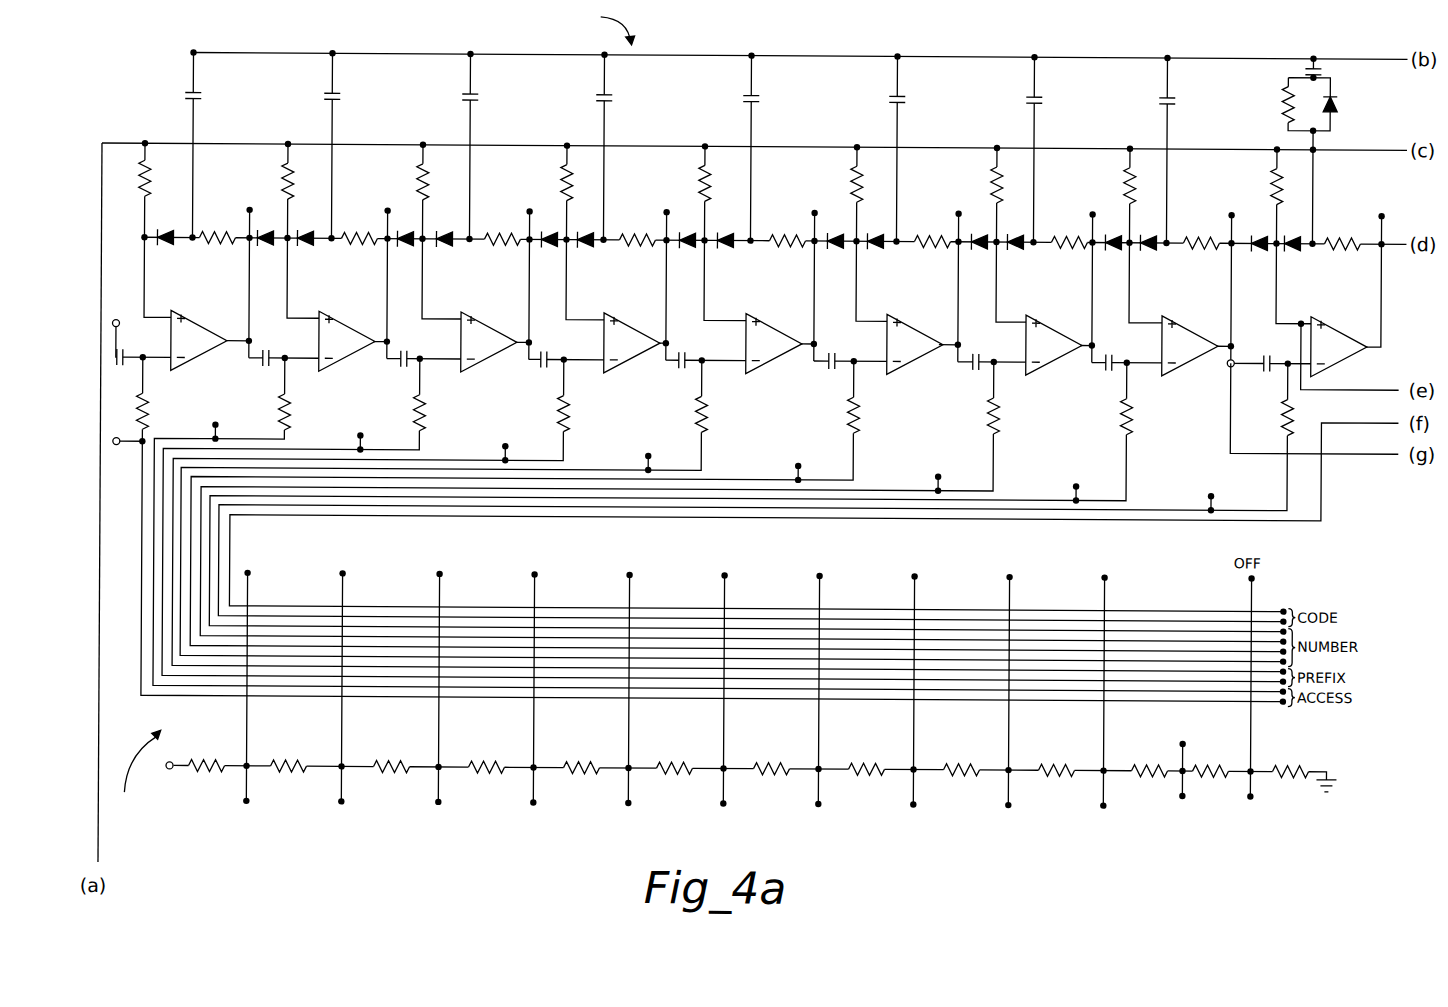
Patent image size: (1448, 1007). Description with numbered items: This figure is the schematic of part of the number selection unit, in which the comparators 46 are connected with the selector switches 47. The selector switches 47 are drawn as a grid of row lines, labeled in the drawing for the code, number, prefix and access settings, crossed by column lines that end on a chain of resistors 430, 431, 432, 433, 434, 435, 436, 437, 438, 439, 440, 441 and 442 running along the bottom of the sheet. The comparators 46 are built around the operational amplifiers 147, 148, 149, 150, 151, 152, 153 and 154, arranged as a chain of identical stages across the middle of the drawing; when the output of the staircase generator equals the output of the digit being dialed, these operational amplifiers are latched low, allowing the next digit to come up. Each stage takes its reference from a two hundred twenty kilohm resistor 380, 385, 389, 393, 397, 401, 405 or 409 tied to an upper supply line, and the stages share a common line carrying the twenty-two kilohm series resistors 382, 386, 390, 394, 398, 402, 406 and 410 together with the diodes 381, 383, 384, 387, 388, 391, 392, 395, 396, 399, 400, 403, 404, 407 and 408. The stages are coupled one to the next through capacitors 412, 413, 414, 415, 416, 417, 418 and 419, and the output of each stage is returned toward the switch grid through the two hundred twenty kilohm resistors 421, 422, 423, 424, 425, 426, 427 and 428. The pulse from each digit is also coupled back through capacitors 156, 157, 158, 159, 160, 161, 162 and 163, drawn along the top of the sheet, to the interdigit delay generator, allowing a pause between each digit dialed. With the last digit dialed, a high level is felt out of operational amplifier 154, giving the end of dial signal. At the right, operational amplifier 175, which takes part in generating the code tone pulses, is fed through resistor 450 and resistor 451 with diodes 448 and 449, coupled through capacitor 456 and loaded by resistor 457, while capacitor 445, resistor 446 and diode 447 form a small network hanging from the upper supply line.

The comparators 46 is at (598, 25).
The selector switches 47 is at (130, 774).
The operational amplifier 147 is at (190, 310).
The operational amplifier 148 is at (320, 340).
The operational amplifier 149 is at (462, 365).
The operational amplifier 150 is at (605, 365).
The operational amplifier 151 is at (747, 365).
The operational amplifier 152 is at (888, 365).
The operational amplifier 153 is at (1027, 365).
The operational amplifier 154 is at (1163, 365).
The capacitor 156 is at (186, 92).
The capacitor 157 is at (326, 92).
The capacitor 158 is at (463, 92).
The capacitor 159 is at (597, 92).
The capacitor 160 is at (745, 92).
The capacitor 161 is at (892, 92).
The capacitor 162 is at (1030, 92).
The capacitor 163 is at (1162, 92).
The operational amplifier 175 is at (1370, 298).
The resistor 380 is at (140, 170).
The diode 381 is at (167, 230).
The resistor 382 is at (218, 232).
The diode 383 is at (266, 246).
The diode 384 is at (305, 246).
The resistor 385 is at (288, 152).
The resistor 386 is at (355, 232).
The diode 387 is at (405, 246).
The diode 388 is at (446, 246).
The resistor 389 is at (421, 180).
The resistor 390 is at (500, 232).
The diode 391 is at (550, 246).
The diode 392 is at (586, 246).
The resistor 393 is at (566, 160).
The resistor 394 is at (638, 232).
The diode 395 is at (688, 246).
The diode 396 is at (726, 246).
The resistor 397 is at (705, 160).
The resistor 398 is at (785, 232).
The diode 399 is at (836, 246).
The diode 400 is at (876, 246).
The resistor 401 is at (857, 160).
The resistor 402 is at (935, 232).
The diode 403 is at (980, 246).
The diode 404 is at (1016, 246).
The resistor 405 is at (997, 160).
The resistor 406 is at (1070, 232).
The diode 407 is at (1114, 246).
The diode 408 is at (1149, 246).
The resistor 409 is at (1130, 160).
The resistor 410 is at (1215, 205).
The capacitor 412 is at (122, 350).
The capacitor 413 is at (272, 362).
The capacitor 414 is at (405, 362).
The capacitor 415 is at (545, 362).
The capacitor 416 is at (683, 362).
The capacitor 417 is at (833, 362).
The capacitor 418 is at (977, 362).
The capacitor 419 is at (1110, 362).
The resistor 421 is at (146, 408).
The resistor 422 is at (288, 412).
The resistor 423 is at (422, 420).
The resistor 424 is at (566, 420).
The resistor 425 is at (705, 420).
The resistor 426 is at (856, 420).
The resistor 427 is at (996, 420).
The resistor 428 is at (1129, 420).
The resistor 430 is at (212, 775).
The resistor 431 is at (312, 775).
The resistor 432 is at (412, 775).
The resistor 433 is at (505, 775).
The resistor 434 is at (602, 775).
The resistor 435 is at (695, 775).
The resistor 436 is at (792, 775).
The resistor 437 is at (886, 775).
The resistor 438 is at (980, 775).
The resistor 439 is at (1076, 775).
The resistor 440 is at (1170, 775).
The resistor 441 is at (1215, 775).
The resistor 442 is at (1295, 775).
The capacitor 445 is at (1305, 58).
The resistor 446 is at (1286, 98).
The diode 447 is at (1334, 97).
The diode 448 is at (1260, 230).
The diode 449 is at (1295, 230).
The resistor 450 is at (1276, 176).
The resistor 451 is at (1343, 246).
The capacitor 456 is at (1285, 333).
The resistor 457 is at (1289, 418).